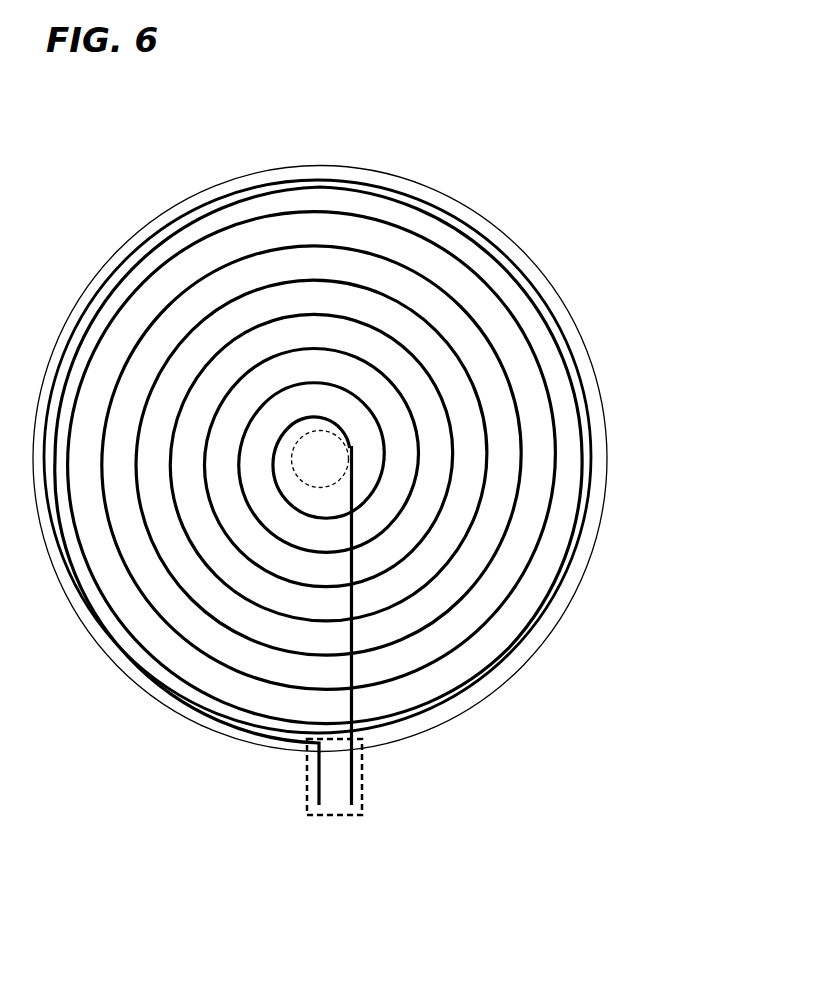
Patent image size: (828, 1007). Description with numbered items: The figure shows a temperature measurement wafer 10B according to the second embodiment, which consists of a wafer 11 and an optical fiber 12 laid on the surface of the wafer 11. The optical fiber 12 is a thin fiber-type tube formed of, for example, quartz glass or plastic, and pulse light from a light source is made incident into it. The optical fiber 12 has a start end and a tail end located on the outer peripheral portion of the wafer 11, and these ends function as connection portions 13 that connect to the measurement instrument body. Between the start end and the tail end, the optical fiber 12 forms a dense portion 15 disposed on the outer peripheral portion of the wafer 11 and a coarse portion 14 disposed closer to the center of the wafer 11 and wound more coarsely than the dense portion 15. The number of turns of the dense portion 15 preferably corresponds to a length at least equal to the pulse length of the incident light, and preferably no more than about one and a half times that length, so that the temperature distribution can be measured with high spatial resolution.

The temperature measurement wafer 10B is at (87, 164).
The wafer 11 is at (475, 207).
The optical fiber 12 is at (677, 358).
The connection portions 13 is at (380, 777).
The coarse portion 14 is at (468, 375).
The dense portion 15 is at (590, 439).